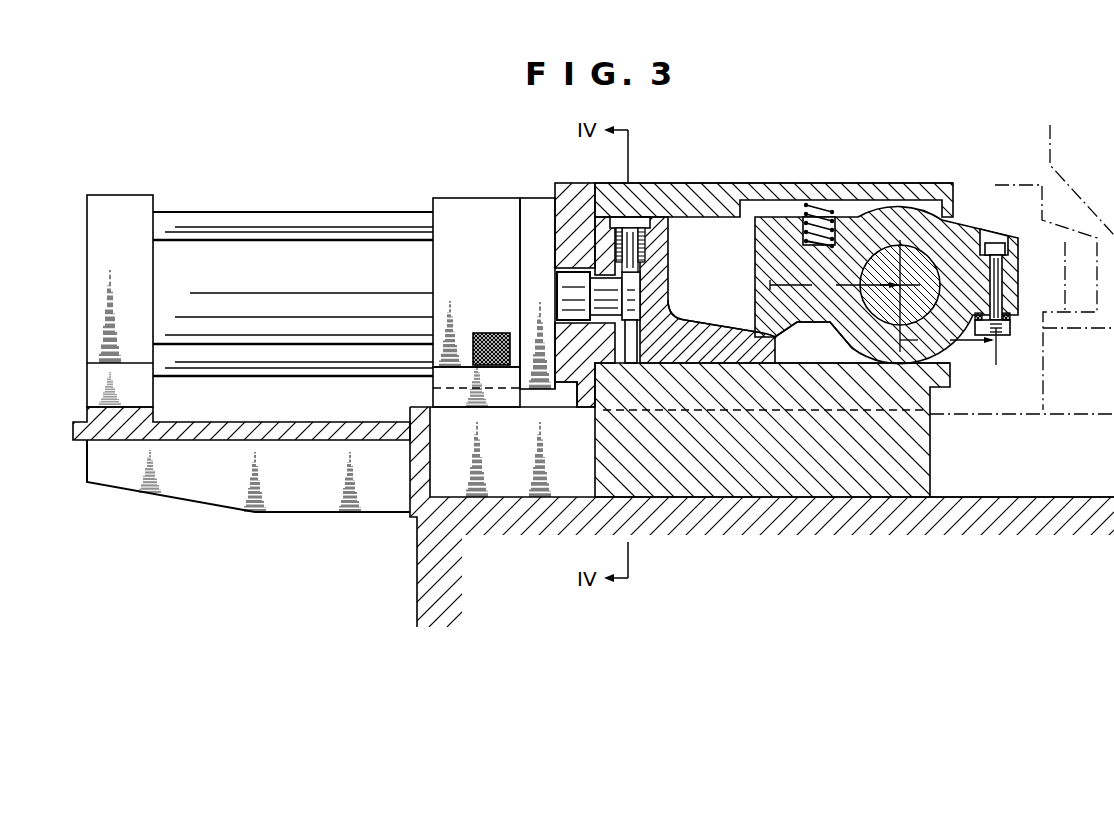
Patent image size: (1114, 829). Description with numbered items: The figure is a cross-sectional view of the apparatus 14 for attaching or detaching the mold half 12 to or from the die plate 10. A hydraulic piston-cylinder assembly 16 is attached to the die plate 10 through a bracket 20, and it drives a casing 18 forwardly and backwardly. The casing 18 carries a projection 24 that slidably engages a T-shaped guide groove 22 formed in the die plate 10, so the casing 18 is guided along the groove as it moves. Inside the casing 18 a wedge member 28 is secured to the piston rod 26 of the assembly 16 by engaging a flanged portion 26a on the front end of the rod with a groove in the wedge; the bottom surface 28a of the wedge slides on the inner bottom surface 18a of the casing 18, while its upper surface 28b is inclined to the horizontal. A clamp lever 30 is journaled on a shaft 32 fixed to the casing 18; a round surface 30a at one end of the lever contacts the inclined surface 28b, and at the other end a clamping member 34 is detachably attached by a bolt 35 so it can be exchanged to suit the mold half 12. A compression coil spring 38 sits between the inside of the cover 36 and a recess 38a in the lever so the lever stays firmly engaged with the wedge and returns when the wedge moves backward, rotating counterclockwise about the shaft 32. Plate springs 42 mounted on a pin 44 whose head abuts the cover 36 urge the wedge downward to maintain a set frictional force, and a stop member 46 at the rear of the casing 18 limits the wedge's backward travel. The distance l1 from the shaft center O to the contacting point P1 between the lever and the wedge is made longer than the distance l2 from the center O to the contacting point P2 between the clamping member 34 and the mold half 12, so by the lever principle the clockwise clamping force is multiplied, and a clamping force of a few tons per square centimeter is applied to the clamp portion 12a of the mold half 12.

The die plate 10 is at (417, 586).
The mold half 12 is at (1046, 161).
The clamp portion 12a is at (1074, 392).
The clamping device 14 is at (449, 160).
The hydraulic piston-cylinder assembly 16 is at (305, 262).
The casing 18 is at (784, 176).
The inner bottom surface 18a is at (870, 364).
The bracket 20 is at (300, 498).
The T-shaped guide groove 22 is at (1060, 492).
The projection 24 is at (932, 430).
The piston rod 26 is at (562, 283).
The flanged portion 26a is at (633, 322).
The wedge member 28 is at (664, 262).
The bottom surface 28a is at (703, 363).
The upper surface 28b is at (740, 330).
The clamp lever 30 is at (878, 217).
The round surface 30a is at (785, 338).
The shaft 32 is at (913, 257).
The clamping member 34 is at (1012, 328).
The bolt 35 is at (993, 247).
The cover 36 is at (712, 196).
The compression coil spring 38 is at (818, 203).
The spring seat 38a is at (836, 212).
The plate springs 42 is at (668, 237).
The pin 44 is at (641, 217).
The stop member 46 is at (572, 186).
The contacting point P1 is at (753, 357).
The contacting point P2 is at (997, 334).
The distance l1 is at (834, 274).
The distance l2 is at (947, 340).
The center O is at (900, 296).